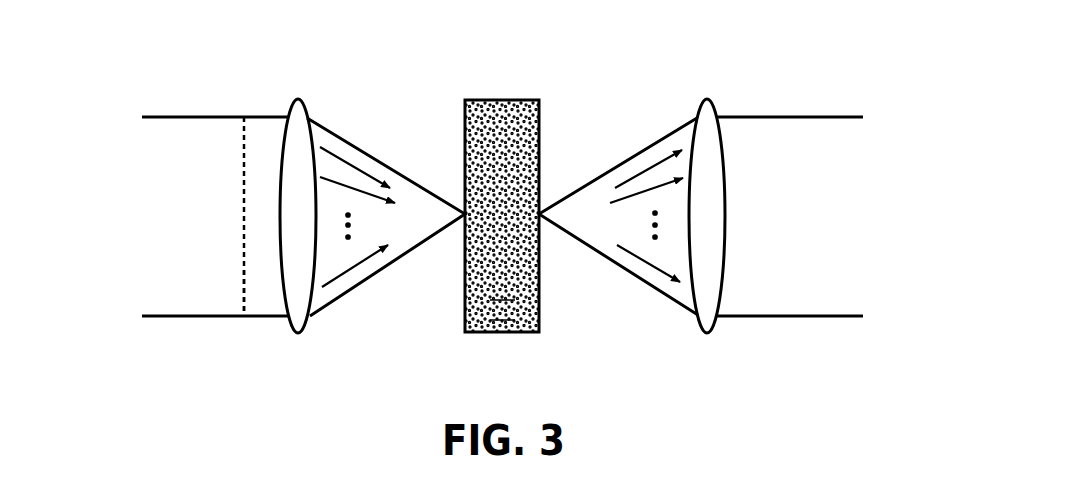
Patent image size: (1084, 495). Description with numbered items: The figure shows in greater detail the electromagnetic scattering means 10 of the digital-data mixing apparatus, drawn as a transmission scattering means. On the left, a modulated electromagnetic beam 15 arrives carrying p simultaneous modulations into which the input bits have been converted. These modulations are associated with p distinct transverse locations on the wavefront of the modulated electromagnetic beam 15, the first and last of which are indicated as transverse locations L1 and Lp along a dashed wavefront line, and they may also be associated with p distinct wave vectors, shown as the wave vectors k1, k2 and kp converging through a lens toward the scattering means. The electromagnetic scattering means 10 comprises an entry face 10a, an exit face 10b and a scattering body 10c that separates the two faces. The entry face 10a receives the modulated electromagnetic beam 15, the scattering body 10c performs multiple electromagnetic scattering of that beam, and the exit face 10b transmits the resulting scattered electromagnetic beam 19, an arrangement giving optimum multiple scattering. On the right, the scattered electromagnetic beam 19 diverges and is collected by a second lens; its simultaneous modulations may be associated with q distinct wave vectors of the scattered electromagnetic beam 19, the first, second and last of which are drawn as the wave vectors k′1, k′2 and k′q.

The electromagnetic scattering means 10 is at (490, 100).
The entry face 10a is at (462, 312).
The exit face 10b is at (542, 312).
The scattering body 10c is at (502, 302).
The modulated electromagnetic beam 15 is at (188, 316).
The scattered electromagnetic beam 19 is at (817, 117).
The first distinct transverse location L1 is at (243, 137).
The p-th distinct transverse location Lp is at (243, 297).
The first distinct wave vector k1 is at (336, 155).
The second distinct wave vector k2 is at (353, 187).
The p-th distinct wave vector kp is at (337, 280).
The first distinct wave vector of the scattered beam k′1 is at (623, 183).
The second distinct wave vector of the scattered beam k′2 is at (658, 187).
The q-th distinct wave vector of the scattered beam k′q is at (648, 267).